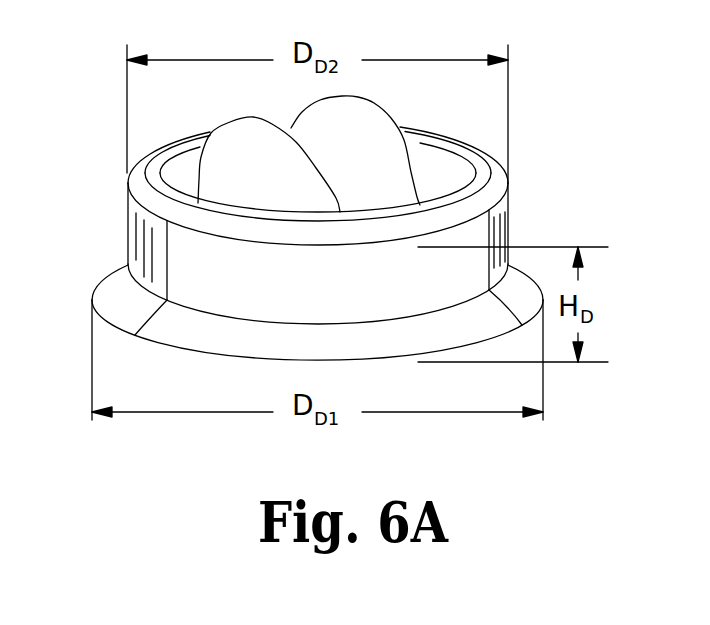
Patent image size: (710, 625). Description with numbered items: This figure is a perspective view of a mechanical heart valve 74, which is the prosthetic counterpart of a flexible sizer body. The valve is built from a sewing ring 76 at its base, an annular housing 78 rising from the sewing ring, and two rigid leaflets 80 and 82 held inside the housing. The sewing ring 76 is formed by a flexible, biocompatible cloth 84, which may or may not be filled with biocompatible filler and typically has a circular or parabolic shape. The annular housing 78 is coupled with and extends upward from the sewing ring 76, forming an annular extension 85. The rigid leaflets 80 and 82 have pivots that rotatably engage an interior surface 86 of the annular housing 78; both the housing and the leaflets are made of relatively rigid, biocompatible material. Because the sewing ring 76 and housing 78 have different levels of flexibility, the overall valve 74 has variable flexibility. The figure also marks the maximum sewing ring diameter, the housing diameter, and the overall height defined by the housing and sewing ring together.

The mechanical heart valve 74 is at (525, 112).
The sewing ring 76 is at (397, 339).
The annular housing 78 is at (512, 222).
The rigid leaflet 80 is at (227, 121).
The rigid leaflet 82 is at (378, 107).
The cloth 84 is at (187, 327).
The annular extension 85 is at (127, 203).
The interior surface 86 is at (427, 163).